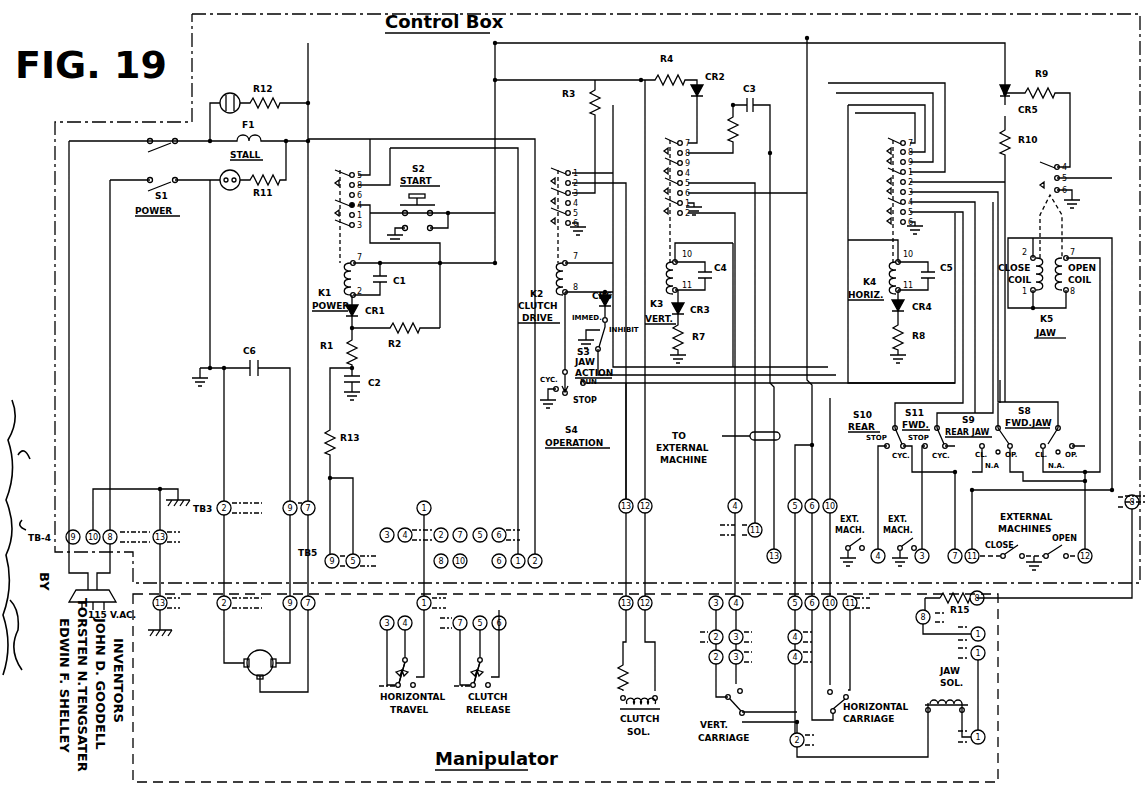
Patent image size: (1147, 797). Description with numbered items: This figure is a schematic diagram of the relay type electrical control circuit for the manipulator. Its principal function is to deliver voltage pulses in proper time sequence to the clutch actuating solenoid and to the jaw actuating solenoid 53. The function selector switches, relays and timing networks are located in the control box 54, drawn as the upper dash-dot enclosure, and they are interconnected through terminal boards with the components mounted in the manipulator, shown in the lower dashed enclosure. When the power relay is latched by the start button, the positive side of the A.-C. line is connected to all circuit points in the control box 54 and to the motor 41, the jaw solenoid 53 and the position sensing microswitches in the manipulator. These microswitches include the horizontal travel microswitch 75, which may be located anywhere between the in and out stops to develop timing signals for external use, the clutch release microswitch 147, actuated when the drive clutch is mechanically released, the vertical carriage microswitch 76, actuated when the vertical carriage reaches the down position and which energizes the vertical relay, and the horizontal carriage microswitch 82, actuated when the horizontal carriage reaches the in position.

The control box 54 is at (192, 22).
The motor 41 is at (246, 671).
The horizontal travel microswitch 75 is at (418, 677).
The clutch release microswitch 147 is at (493, 677).
The vertical carriage microswitch 76 is at (744, 703).
The horizontal carriage microswitch 82 is at (847, 693).
The jaw actuating solenoid 53 is at (930, 694).